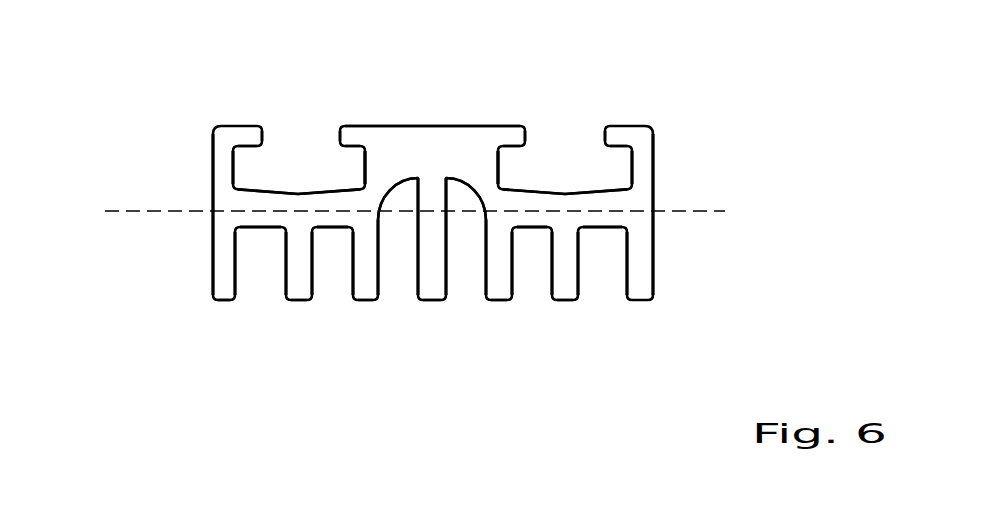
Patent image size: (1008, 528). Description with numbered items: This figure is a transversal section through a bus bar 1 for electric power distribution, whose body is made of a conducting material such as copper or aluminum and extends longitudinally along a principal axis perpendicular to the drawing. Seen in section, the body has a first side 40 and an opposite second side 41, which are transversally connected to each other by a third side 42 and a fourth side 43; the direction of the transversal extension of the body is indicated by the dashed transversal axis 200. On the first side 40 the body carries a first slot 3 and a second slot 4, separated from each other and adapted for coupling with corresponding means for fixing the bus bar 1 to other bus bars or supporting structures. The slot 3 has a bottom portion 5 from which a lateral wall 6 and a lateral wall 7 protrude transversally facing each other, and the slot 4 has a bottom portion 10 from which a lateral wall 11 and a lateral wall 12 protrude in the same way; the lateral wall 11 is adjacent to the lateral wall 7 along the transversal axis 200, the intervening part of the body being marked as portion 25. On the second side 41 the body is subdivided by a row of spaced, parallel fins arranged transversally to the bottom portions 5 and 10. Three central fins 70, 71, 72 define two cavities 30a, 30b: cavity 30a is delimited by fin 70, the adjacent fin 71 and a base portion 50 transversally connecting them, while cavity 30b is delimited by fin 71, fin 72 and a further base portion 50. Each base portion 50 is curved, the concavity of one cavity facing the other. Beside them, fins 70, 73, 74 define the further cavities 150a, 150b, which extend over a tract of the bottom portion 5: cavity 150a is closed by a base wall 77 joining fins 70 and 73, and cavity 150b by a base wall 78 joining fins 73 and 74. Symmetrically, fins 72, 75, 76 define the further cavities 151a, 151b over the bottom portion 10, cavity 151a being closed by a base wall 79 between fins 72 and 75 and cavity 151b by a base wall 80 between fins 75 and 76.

The bus bar 1 is at (733, 82).
The first slot 3 is at (273, 163).
The second slot 4 is at (540, 168).
The bottom portion 5 is at (293, 192).
The lateral wall 6 is at (238, 167).
The lateral wall 7 is at (360, 167).
The bottom portion 10 is at (558, 192).
The lateral wall 11 is at (507, 167).
The lateral wall 12 is at (627, 167).
The central body 25 is at (477, 155).
The cavity 30a is at (400, 287).
The cavity 30b is at (462, 287).
The first side 40 is at (382, 122).
The second side 41 is at (223, 310).
The third side 42 is at (207, 253).
The fourth side 43 is at (662, 260).
The base portion 50 is at (468, 183).
The fin 70 is at (363, 290).
The fin 71 is at (432, 290).
The fin 72 is at (498, 292).
The fin 73 is at (297, 292).
The fin 74 is at (223, 280).
The fin 75 is at (567, 292).
The fin 76 is at (643, 290).
The base wall 77 is at (332, 232).
The base wall 78 is at (253, 230).
The base wall 79 is at (531, 232).
The base wall 80 is at (601, 232).
The cavity 150a is at (326, 280).
The cavity 150b is at (252, 280).
The cavity 151a is at (533, 290).
The cavity 151b is at (612, 290).
The transversal axis 200 is at (695, 208).